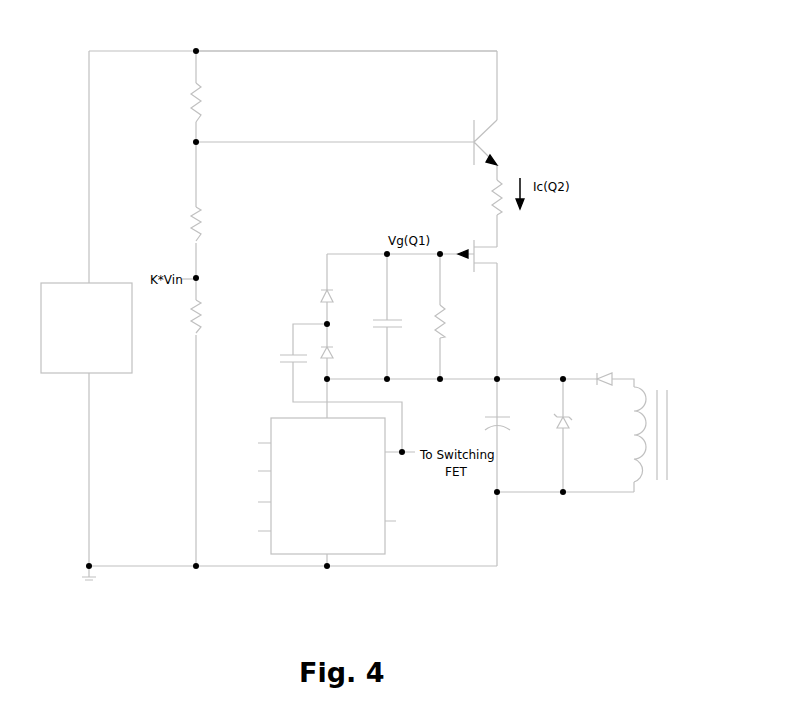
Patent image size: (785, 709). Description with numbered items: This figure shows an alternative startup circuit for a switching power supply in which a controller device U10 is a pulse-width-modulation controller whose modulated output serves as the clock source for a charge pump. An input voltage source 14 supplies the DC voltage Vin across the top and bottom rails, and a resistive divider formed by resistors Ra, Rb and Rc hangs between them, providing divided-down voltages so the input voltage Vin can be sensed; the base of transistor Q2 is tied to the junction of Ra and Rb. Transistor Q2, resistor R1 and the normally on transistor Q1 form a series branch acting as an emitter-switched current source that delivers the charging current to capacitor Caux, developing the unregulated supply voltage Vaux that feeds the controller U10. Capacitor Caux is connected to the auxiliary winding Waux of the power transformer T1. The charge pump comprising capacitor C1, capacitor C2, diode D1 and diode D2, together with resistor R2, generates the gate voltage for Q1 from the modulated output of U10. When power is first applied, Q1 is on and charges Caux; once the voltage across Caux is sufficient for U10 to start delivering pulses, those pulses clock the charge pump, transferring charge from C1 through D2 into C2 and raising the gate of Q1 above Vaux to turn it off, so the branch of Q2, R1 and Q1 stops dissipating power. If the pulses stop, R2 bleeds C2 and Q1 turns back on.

The input voltage source 14 is at (86, 316).
The normally on transistor Q1 is at (505, 256).
The transistor Q2 is at (517, 142).
The resistor R1 is at (483, 197).
The resistor R2 is at (450, 316).
The resistor Ra is at (206, 102).
The resistor Rb is at (207, 224).
The resistor Rc is at (206, 316).
The capacitor C1 is at (347, 388).
The capacitor C2 is at (389, 316).
The diode D1 is at (335, 354).
The diode D2 is at (335, 296).
The controller device U10 is at (327, 472).
The power transformer T1 is at (627, 427).
The capacitor Caux is at (515, 424).
The auxiliary winding Waux is at (641, 479).
The DC voltage Vin is at (346, 42).
The voltage Vaux is at (462, 370).